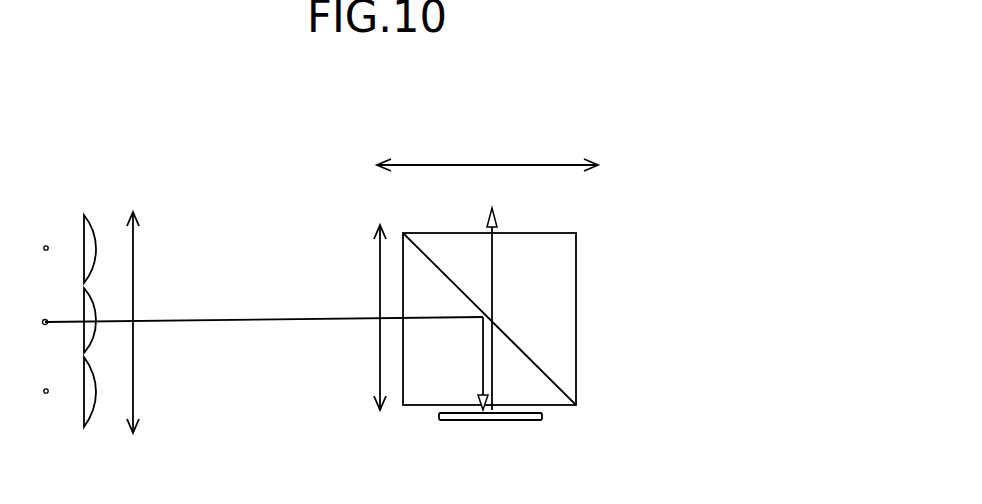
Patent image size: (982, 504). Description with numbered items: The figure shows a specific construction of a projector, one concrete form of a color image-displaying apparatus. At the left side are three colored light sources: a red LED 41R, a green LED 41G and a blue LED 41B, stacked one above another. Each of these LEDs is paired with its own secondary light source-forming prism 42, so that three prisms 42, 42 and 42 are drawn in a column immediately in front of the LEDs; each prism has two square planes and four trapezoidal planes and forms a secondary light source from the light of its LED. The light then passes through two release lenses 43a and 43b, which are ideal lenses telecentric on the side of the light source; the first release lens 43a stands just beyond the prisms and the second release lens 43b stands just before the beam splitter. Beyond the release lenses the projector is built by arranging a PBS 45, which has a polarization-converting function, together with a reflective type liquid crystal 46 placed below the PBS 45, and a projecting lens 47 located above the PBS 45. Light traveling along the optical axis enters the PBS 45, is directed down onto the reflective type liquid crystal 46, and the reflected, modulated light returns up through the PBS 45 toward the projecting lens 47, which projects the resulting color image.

The red LED 41R is at (43, 236).
The green LED 41G is at (43, 321).
The blue LED 41B is at (44, 393).
The secondary light source-forming prism 42 is at (82, 212).
The release lens 43a is at (135, 242).
The release lens 43b is at (375, 252).
The PBS 45 is at (597, 316).
The reflective type liquid crystal 46 is at (545, 432).
The projecting lens 47 is at (562, 139).